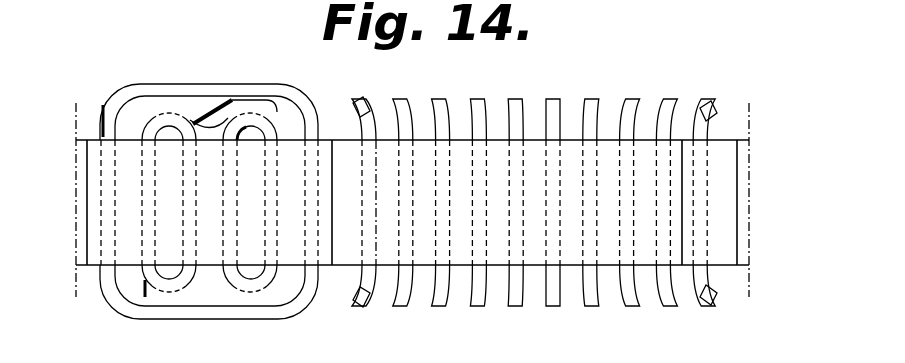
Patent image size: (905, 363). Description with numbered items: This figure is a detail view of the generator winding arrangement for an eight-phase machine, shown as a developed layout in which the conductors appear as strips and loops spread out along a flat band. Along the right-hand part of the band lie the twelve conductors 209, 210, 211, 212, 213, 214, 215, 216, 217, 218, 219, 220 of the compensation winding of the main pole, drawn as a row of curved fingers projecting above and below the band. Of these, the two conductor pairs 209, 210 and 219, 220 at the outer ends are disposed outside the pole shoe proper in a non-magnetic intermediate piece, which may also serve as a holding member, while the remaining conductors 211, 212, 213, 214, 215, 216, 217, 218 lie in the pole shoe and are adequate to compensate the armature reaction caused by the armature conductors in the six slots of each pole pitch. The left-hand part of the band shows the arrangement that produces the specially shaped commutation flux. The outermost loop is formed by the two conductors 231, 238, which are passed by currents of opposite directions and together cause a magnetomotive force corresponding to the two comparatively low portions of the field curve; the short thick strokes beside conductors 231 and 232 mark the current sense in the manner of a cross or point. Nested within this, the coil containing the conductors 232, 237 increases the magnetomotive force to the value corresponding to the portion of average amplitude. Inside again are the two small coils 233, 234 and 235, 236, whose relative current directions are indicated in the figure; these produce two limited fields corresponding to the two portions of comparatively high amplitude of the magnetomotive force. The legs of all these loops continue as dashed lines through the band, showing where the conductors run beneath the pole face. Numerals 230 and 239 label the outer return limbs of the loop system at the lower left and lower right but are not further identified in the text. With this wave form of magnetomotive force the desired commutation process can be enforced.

The compensation winding conductor 209 is at (360, 301).
The compensation winding conductor 210 is at (363, 106).
The compensation winding conductor 211 is at (400, 110).
The compensation winding conductor 212 is at (438, 108).
The compensation winding conductor 213 is at (476, 108).
The compensation winding conductor 214 is at (514, 107).
The compensation winding conductor 215 is at (553, 106).
The compensation winding conductor 216 is at (591, 106).
The compensation winding conductor 217 is at (631, 108).
The compensation winding conductor 218 is at (668, 108).
The compensation winding conductor 219 is at (708, 305).
The compensation winding conductor 220 is at (710, 106).
The conductor loop 230 is at (112, 270).
The conductor 231 is at (100, 135).
The coil conductor 232 is at (150, 272).
The coil 233 is at (150, 132).
The coil 234 is at (188, 268).
The coil 235 is at (230, 268).
The coil 236 is at (270, 132).
The coil conductor 237 is at (273, 280).
The conductor 238 is at (310, 137).
The conductor loop 239 is at (308, 268).